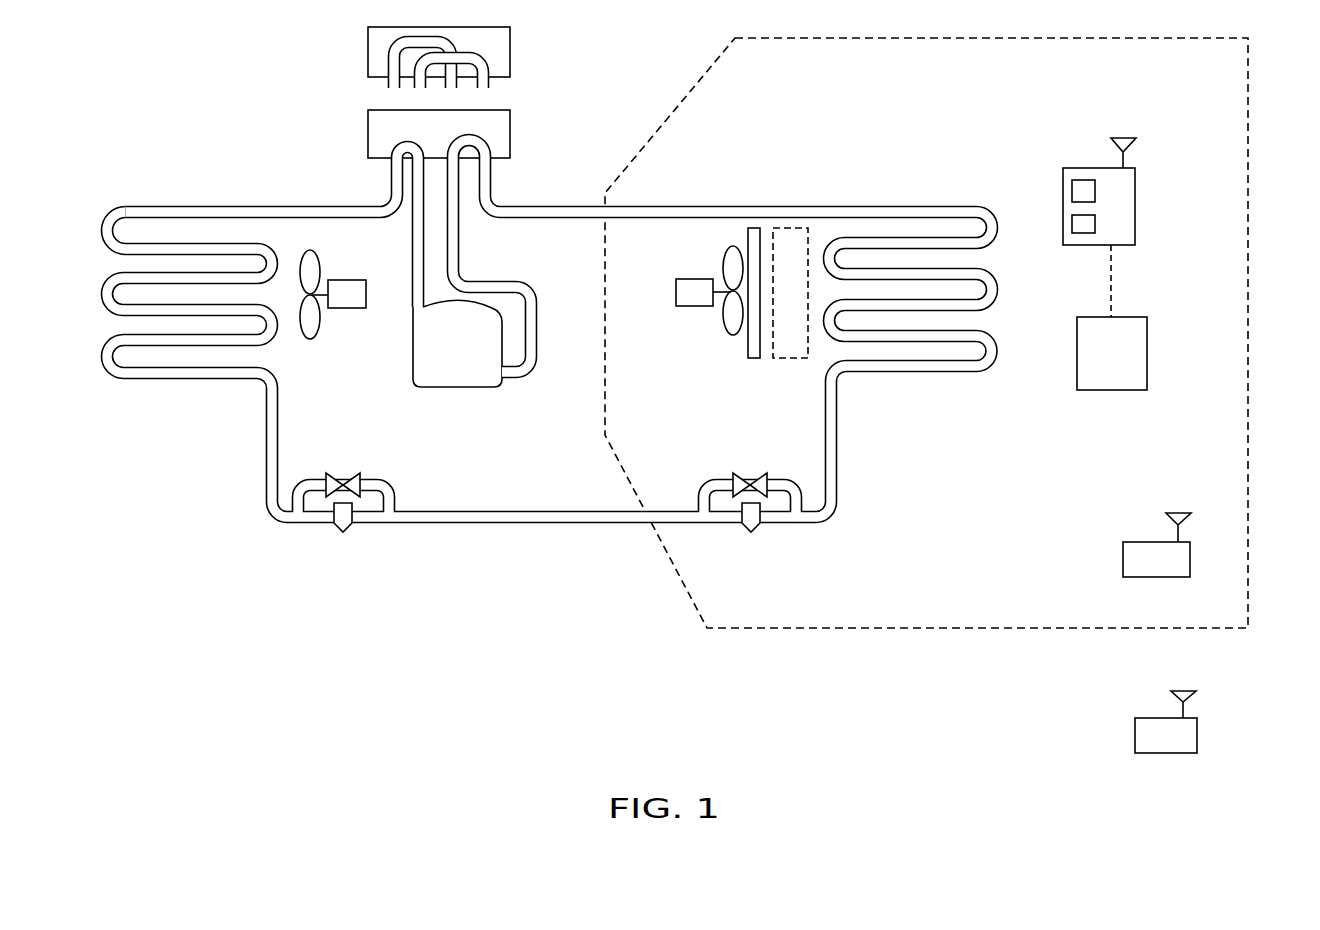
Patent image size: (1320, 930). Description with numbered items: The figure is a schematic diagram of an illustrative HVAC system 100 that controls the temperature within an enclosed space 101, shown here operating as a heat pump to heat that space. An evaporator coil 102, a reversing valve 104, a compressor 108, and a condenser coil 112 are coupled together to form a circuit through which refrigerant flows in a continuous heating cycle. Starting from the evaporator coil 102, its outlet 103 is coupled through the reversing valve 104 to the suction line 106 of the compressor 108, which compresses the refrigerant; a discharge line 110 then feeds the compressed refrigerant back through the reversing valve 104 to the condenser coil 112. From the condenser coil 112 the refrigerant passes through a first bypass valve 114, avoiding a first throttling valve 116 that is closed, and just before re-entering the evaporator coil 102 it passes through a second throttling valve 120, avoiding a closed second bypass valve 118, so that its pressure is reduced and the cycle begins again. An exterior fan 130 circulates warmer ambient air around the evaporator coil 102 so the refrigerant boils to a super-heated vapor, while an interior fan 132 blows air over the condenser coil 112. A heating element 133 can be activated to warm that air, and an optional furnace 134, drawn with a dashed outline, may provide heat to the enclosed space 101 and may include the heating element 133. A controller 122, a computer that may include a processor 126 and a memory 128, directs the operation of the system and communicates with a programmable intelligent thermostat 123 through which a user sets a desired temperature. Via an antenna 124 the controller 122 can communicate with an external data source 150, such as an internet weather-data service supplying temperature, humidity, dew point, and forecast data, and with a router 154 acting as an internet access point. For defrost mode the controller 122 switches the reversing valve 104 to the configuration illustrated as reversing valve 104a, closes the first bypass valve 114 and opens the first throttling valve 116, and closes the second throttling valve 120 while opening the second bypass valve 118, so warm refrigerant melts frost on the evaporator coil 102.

The HVAC system 100 is at (115, 138).
The enclosed space 101 is at (1252, 328).
The evaporator coil 102 is at (180, 378).
The outlet 103 is at (288, 207).
The reversing valve 104 is at (368, 128).
The reversing valve (defrost configuration) 104a is at (368, 53).
The suction line 106 is at (412, 228).
The compressor 108 is at (458, 387).
The discharge line 110 is at (458, 232).
The condenser coil 112 is at (990, 362).
The first bypass valve 114 is at (750, 476).
The first throttling valve 116 is at (751, 532).
The second bypass valve 118 is at (340, 476).
The second throttling valve 120 is at (343, 532).
The controller 122 is at (1138, 212).
The programmable intelligent thermostat 123 is at (1077, 345).
The antenna 124 is at (1122, 133).
The processor 126 is at (1072, 192).
The memory 128 is at (1072, 223).
The exterior fan 130 is at (352, 308).
The interior fan 132 is at (692, 306).
The heating element 133 is at (742, 352).
The furnace 134 is at (792, 362).
The external data source 150 is at (1135, 735).
The router 154 is at (1123, 560).